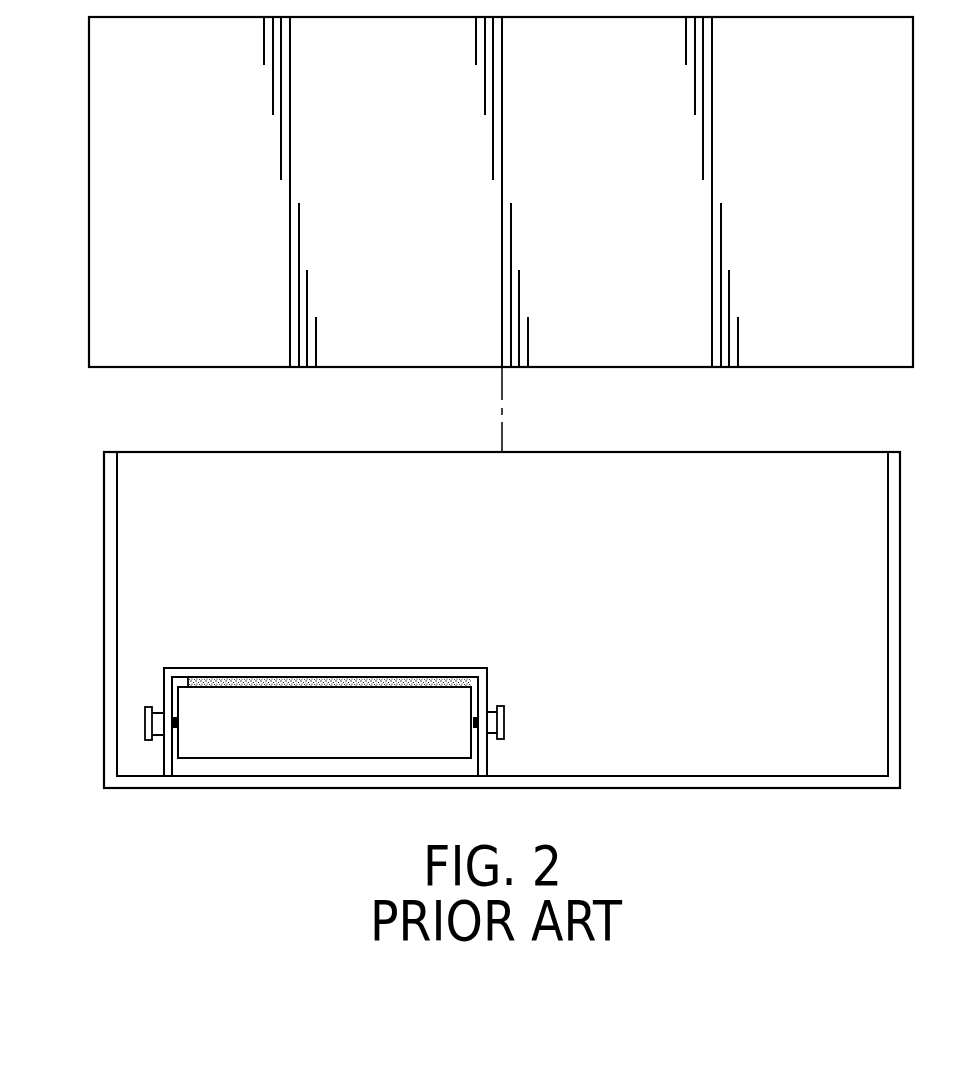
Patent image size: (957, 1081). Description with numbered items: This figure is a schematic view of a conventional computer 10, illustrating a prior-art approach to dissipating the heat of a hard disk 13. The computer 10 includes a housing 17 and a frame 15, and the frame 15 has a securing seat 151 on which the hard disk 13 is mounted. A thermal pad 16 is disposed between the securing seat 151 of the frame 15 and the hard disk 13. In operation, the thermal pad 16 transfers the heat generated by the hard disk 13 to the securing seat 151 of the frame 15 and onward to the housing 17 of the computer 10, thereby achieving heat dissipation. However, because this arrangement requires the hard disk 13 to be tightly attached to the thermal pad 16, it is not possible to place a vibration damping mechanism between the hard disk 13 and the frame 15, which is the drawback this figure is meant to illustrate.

The computer 10 is at (101, 416).
The hard disk 13 is at (366, 718).
The frame 15 is at (98, 628).
The thermal pad 16 is at (253, 679).
The housing 17 is at (126, 239).
The securing seat 151 is at (168, 758).